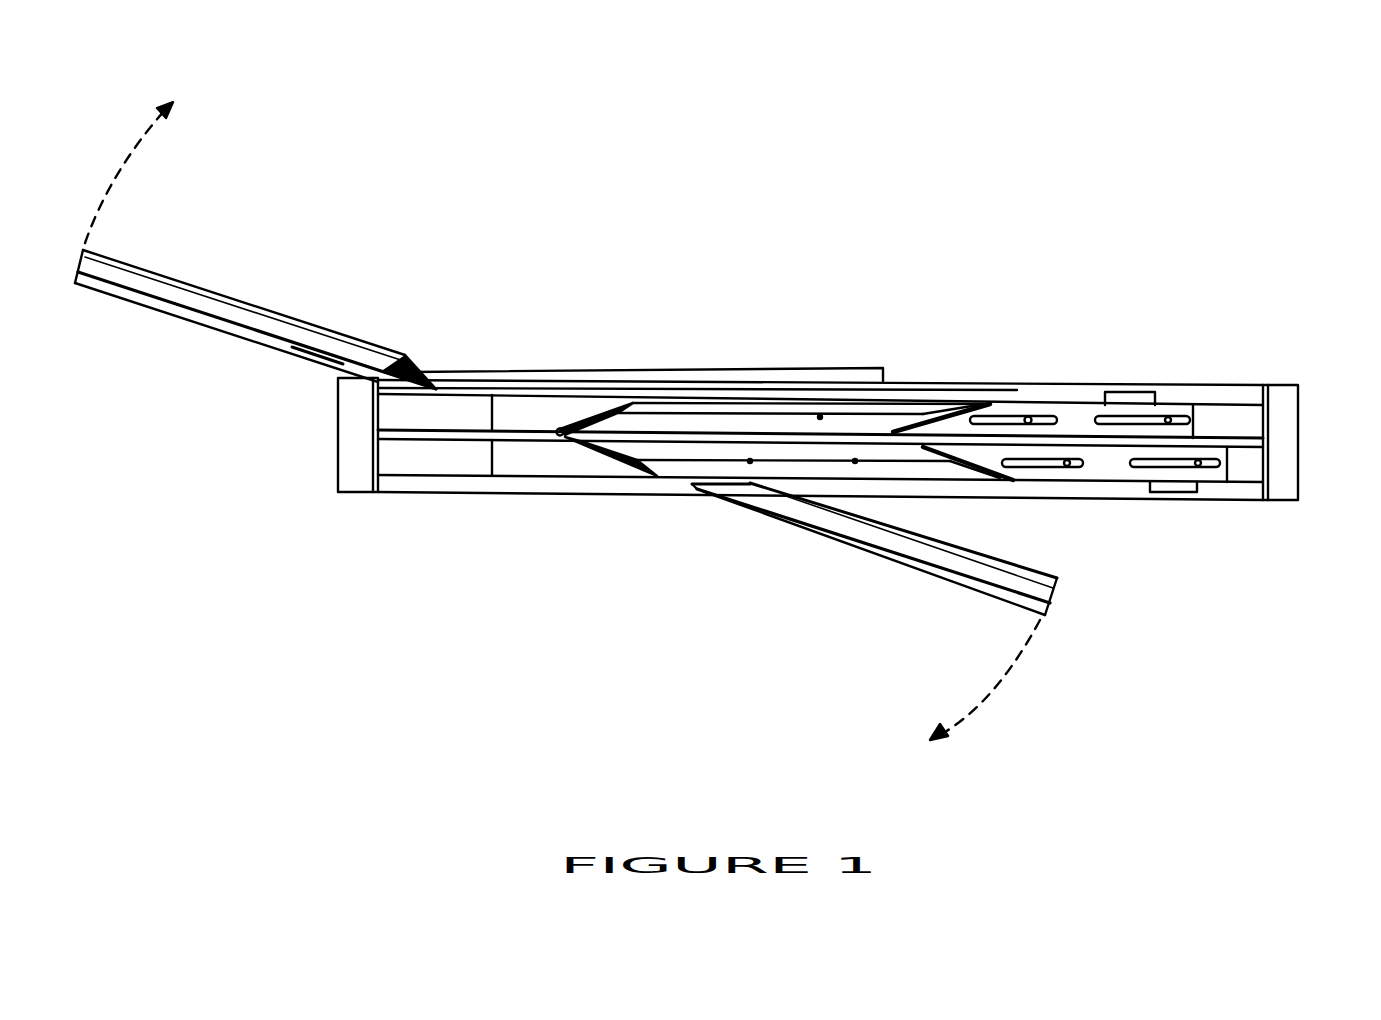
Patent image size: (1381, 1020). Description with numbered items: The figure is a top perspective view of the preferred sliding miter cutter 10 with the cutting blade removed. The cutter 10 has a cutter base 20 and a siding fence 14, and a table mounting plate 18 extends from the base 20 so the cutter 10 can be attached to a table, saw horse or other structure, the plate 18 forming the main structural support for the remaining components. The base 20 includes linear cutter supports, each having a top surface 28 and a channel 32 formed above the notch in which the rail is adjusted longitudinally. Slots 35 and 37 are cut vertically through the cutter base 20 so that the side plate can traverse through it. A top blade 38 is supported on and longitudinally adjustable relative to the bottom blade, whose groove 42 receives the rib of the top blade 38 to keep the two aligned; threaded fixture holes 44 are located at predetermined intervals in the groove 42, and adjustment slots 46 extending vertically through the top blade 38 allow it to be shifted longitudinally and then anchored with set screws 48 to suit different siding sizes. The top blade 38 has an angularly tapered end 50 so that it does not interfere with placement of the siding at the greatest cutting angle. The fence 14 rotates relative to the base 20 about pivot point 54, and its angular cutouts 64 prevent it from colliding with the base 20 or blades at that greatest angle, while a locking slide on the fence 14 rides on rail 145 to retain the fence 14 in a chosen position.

The sliding miter cutter 10 is at (968, 213).
The siding fence 14 is at (255, 319).
The table mounting plate 18 is at (1290, 433).
The cutter base 20 is at (845, 421).
The top surface 28 is at (857, 342).
The channel 32 is at (1207, 413).
The slot 35 is at (1133, 392).
The slot 37 is at (1177, 492).
The top blade 38 is at (1111, 501).
The groove 42 is at (804, 369).
The threaded fixture holes 44 is at (908, 375).
The adjustment slots 46 is at (999, 372).
The set screws 48 is at (1080, 372).
The angularly tapered end 50 is at (838, 427).
The pivot point 54 is at (608, 373).
The angular cutouts 64 is at (535, 410).
The rail 145 is at (646, 327).